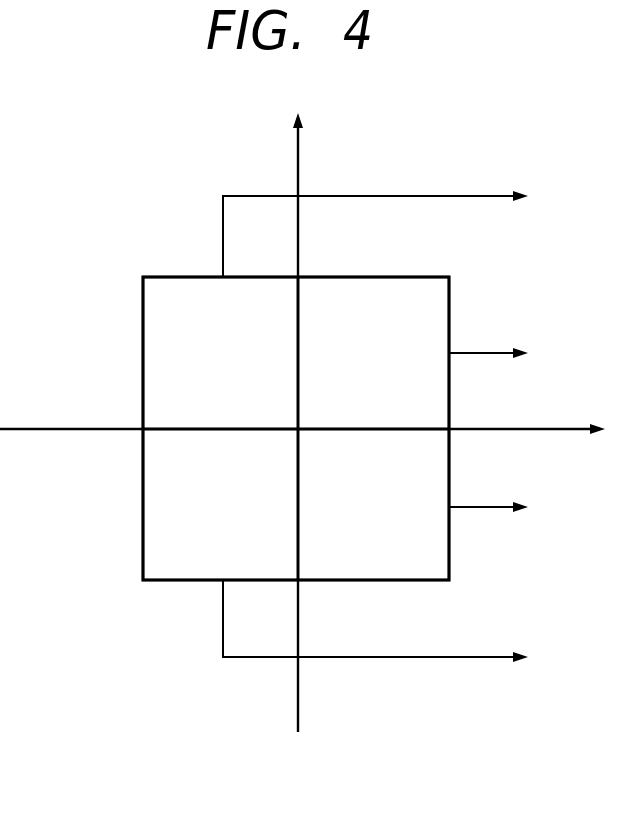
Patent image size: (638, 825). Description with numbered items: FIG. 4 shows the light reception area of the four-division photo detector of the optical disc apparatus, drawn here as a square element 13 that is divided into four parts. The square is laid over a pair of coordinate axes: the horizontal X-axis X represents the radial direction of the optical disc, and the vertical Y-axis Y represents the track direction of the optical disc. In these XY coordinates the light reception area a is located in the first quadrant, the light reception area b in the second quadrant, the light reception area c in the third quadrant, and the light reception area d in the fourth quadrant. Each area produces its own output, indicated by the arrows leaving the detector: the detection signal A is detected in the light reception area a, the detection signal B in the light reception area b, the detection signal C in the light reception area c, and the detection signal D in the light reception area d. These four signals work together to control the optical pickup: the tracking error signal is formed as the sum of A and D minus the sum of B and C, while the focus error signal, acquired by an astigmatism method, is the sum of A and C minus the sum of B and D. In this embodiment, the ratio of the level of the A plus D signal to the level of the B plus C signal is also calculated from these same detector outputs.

The quadrant photodetector (four-divided light receiving element) 13 is at (143, 394).
The light reception area a is at (373, 353).
The light reception area b is at (220, 353).
The light reception area c is at (220, 504).
The light reception area d is at (373, 504).
The detection signal A is at (500, 354).
The detection signal B is at (387, 231).
The detection signal C is at (387, 625).
The detection signal D is at (501, 508).
The X-axis X is at (314, 430).
The Y-axis Y is at (296, 408).